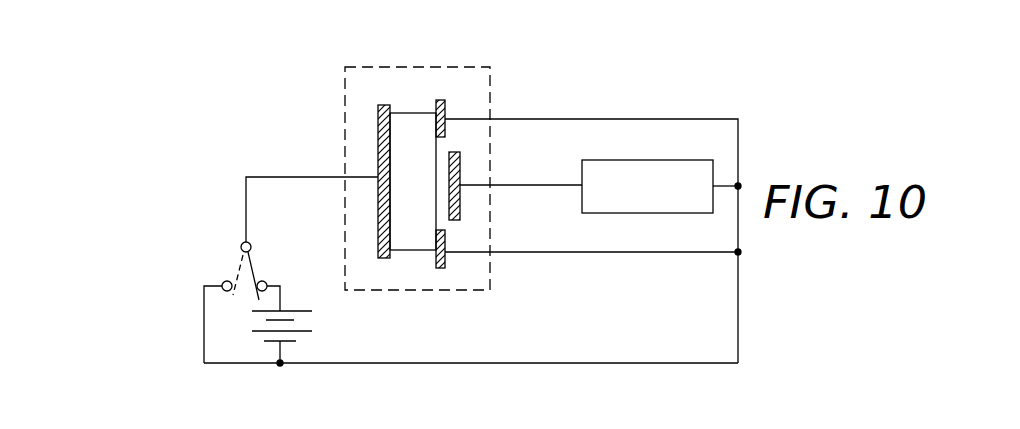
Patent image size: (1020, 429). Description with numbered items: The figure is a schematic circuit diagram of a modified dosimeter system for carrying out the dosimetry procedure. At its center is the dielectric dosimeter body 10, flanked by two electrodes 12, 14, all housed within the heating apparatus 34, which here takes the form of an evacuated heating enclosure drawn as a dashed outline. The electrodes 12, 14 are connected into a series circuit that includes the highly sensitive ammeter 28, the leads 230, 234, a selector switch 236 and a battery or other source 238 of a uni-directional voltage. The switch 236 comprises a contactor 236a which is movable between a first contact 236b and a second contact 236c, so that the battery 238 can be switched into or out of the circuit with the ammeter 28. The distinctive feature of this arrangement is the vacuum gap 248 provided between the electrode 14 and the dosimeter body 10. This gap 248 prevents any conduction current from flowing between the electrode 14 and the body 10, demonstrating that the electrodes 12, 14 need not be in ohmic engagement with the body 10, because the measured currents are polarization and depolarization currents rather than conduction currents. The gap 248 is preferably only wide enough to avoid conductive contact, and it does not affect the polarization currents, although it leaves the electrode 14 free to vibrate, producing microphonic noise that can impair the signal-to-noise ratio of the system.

The dielectric dosimeter body 10 is at (405, 113).
The electrode 12 is at (378, 127).
The electrode 14 is at (460, 168).
The ammeter 28 is at (630, 160).
The heating apparatus 34 is at (496, 106).
The lead 230 is at (283, 177).
The lead 234 is at (405, 363).
The selector switch 236 is at (243, 278).
The contactor 236a is at (250, 242).
The contact 236b is at (266, 283).
The contact 236c is at (224, 283).
The battery 238 is at (248, 325).
The vacuum gap 248 is at (439, 223).